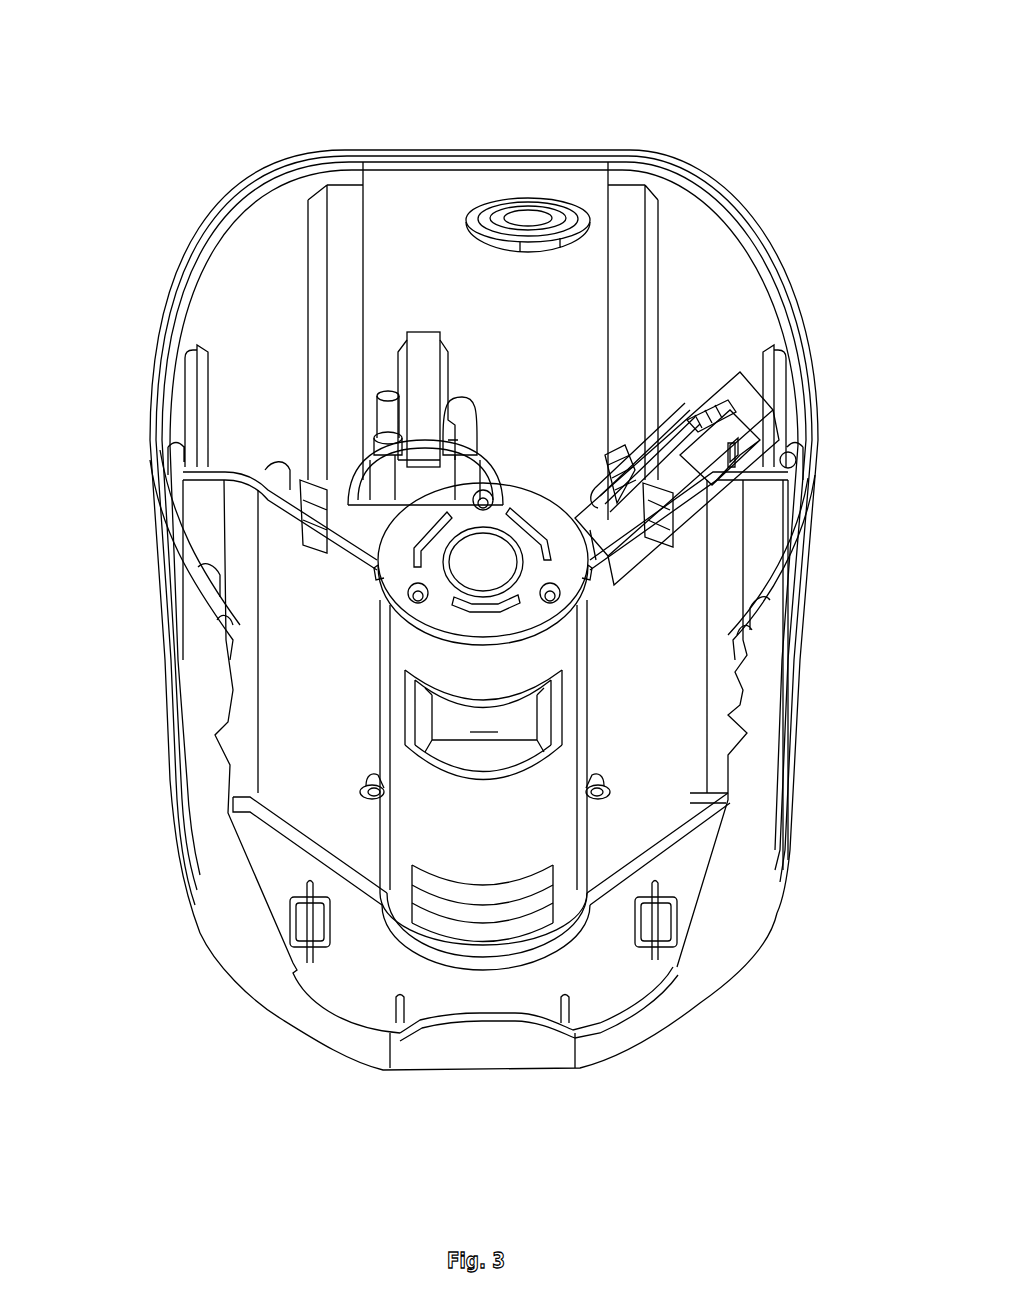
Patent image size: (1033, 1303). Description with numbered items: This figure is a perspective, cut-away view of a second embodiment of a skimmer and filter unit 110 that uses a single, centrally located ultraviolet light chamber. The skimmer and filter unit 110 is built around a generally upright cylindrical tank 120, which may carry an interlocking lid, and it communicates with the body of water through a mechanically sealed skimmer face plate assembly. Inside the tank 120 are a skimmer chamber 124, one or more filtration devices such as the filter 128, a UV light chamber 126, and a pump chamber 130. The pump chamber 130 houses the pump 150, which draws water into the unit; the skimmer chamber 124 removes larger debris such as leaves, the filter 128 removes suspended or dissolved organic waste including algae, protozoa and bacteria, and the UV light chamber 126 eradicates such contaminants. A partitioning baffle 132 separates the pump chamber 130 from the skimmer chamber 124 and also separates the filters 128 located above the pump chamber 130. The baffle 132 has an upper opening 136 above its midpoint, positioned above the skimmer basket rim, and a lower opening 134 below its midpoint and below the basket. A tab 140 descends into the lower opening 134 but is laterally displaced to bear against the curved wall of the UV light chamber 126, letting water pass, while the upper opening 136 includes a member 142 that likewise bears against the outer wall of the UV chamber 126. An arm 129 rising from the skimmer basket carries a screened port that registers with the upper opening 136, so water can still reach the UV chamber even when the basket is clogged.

The skimmer and filter unit 110 is at (203, 140).
The cylindrical tank 120 is at (810, 793).
The skimmer chamber 124 is at (297, 860).
The UV light chamber 126 is at (532, 472).
The filter 128 is at (768, 430).
The arm 129 is at (720, 375).
The pump chamber 130 is at (460, 420).
The partitioning baffle 132 is at (322, 713).
The opening 134 is at (509, 930).
The opening 136 is at (542, 708).
The tab 140 is at (440, 910).
The member 142 is at (484, 722).
The pump 150 is at (387, 417).